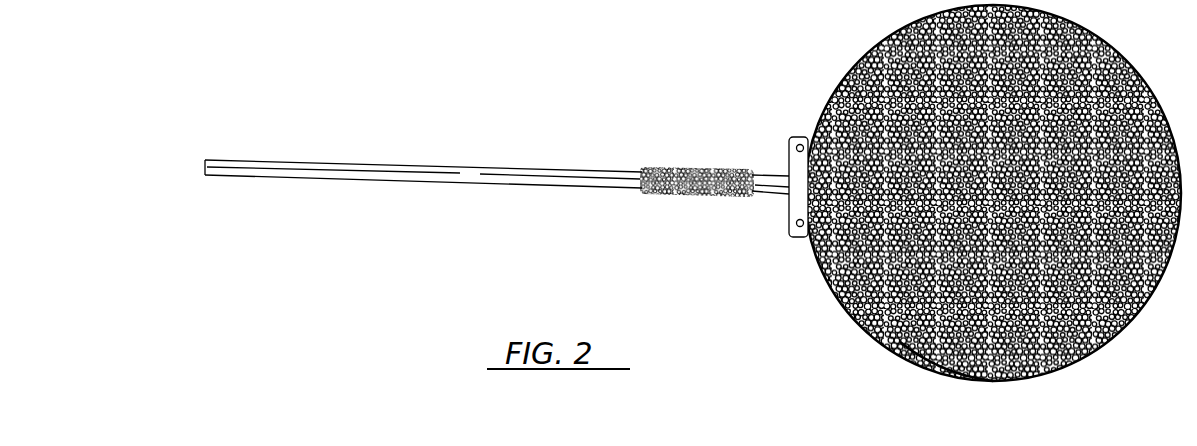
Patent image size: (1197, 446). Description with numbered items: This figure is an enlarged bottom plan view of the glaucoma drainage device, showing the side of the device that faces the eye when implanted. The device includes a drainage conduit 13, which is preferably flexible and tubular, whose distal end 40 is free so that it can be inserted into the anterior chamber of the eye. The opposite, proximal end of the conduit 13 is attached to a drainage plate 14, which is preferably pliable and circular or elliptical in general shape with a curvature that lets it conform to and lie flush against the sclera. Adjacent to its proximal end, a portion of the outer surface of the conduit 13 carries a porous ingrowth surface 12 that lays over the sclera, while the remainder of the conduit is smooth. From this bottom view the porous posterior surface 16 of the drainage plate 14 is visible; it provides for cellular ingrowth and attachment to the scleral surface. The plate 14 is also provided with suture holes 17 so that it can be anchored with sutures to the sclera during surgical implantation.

The porous ingrowth surface 12 is at (678, 197).
The drainage conduit 13 is at (435, 166).
The drainage plate 14 is at (1112, 46).
The porous posterior surface 16 is at (925, 368).
The suture holes 17 is at (800, 144).
The distal end 40 is at (205, 167).